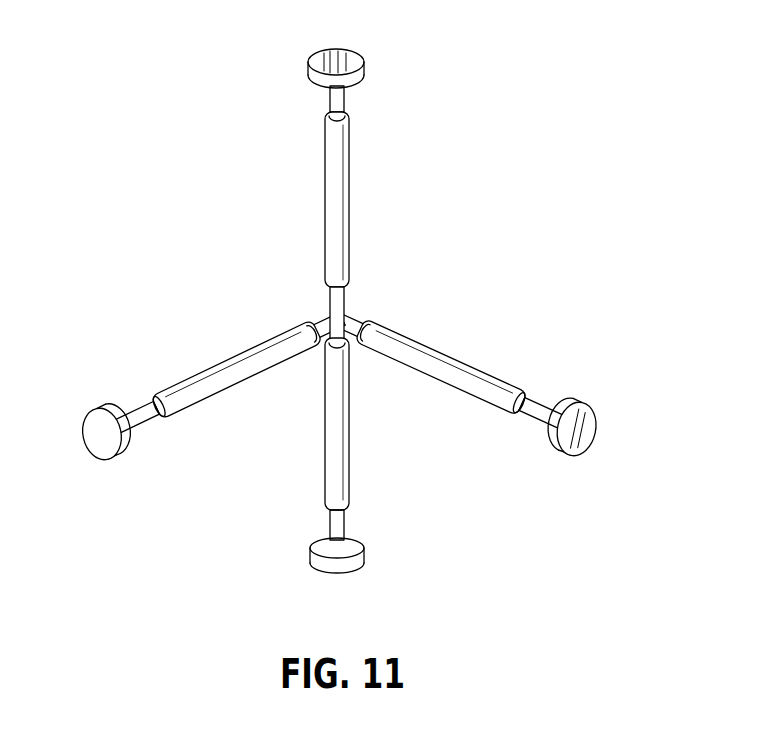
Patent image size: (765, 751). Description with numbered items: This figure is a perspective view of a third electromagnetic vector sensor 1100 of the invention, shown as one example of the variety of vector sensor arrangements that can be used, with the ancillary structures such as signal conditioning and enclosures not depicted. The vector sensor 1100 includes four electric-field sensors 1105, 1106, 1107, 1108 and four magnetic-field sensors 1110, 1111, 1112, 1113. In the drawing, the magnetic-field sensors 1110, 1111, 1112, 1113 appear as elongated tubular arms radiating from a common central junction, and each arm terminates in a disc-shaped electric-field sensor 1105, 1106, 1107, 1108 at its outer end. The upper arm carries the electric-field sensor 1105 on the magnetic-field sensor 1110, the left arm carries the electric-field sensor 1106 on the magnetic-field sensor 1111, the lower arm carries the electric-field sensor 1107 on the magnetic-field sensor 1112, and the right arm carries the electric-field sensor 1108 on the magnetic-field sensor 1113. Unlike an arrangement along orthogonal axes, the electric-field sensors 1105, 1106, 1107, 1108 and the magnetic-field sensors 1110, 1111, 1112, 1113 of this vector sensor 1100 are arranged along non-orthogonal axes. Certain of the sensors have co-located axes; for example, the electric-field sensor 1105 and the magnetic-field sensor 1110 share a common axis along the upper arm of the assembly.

The vector sensor 1100 is at (210, 133).
The electric-field sensor 1105 is at (335, 54).
The electric-field sensor 1106 is at (98, 432).
The electric-field sensor 1107 is at (340, 568).
The electric-field sensor 1108 is at (581, 433).
The magnetic-field sensor 1110 is at (333, 178).
The magnetic-field sensor 1111 is at (217, 372).
The magnetic-field sensor 1112 is at (348, 463).
The magnetic-field sensor 1113 is at (460, 368).